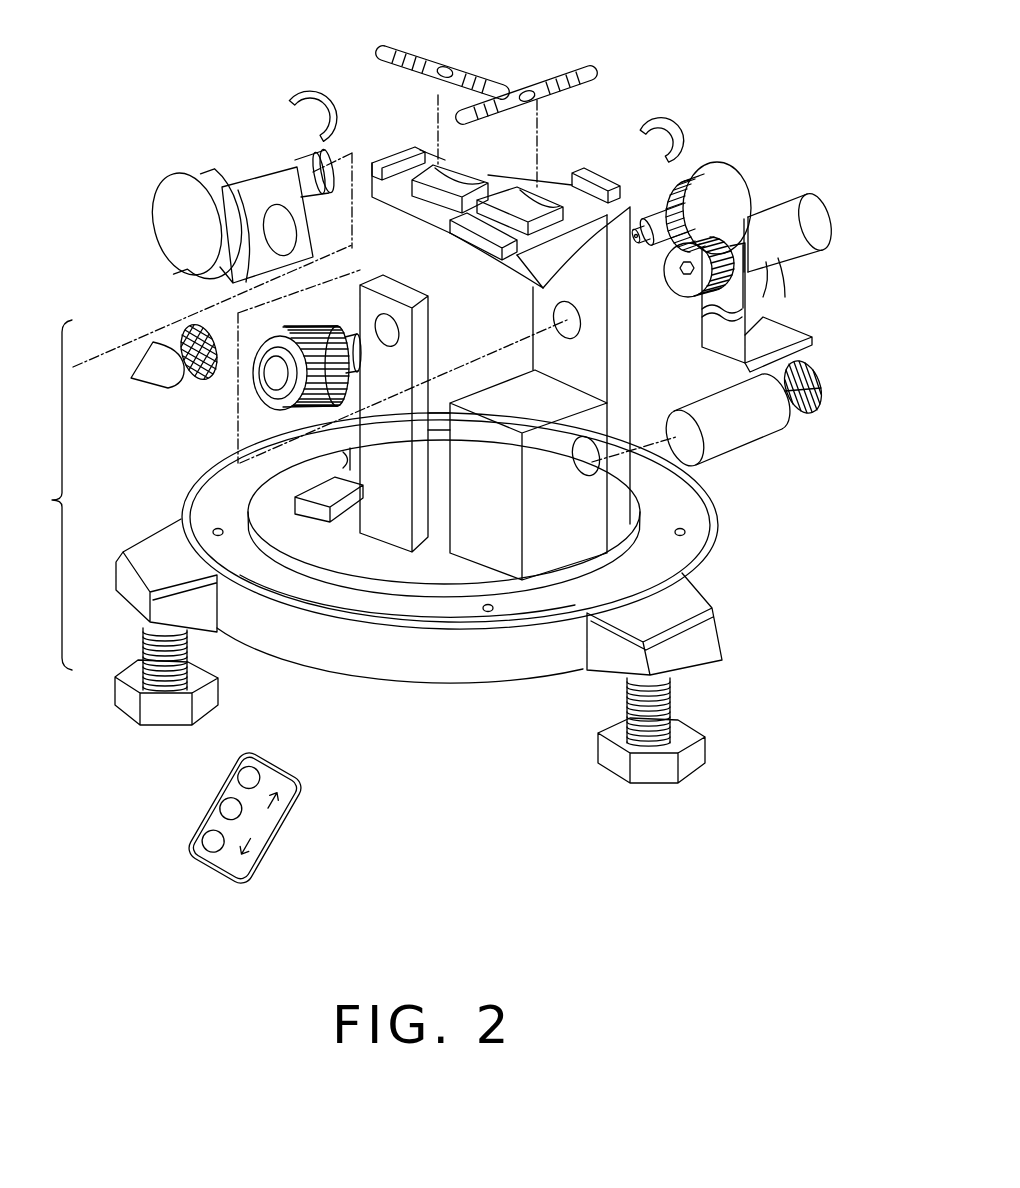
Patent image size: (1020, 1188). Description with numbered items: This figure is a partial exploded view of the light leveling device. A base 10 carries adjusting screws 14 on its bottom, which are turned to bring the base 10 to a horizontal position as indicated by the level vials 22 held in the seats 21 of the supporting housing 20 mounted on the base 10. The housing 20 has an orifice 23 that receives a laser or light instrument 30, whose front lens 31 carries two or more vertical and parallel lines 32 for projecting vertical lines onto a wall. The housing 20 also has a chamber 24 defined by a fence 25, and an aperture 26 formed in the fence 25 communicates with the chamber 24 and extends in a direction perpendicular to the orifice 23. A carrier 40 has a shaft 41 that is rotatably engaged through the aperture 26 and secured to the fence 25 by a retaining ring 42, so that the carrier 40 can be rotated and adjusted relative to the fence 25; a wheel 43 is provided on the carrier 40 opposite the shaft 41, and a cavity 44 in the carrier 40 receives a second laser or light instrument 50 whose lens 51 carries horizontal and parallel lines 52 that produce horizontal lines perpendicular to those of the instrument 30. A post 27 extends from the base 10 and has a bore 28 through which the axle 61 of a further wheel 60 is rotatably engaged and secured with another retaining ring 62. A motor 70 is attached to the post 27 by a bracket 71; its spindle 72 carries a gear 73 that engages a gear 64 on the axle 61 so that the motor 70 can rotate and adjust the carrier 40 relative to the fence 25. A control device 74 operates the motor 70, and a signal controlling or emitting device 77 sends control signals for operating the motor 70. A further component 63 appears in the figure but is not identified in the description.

The base 10 is at (440, 675).
The adjusting screws 14 is at (167, 677).
The supporting housing 20 is at (553, 392).
The seats 21 is at (453, 178).
The level vials 22 is at (468, 73).
The orifice 23 is at (588, 455).
The chamber 24 is at (513, 410).
The fence 25 is at (606, 365).
The aperture 26 is at (570, 322).
The post 27 is at (392, 491).
The bore 28 is at (388, 328).
The laser or light instrument 30 is at (742, 430).
The lens 31 is at (815, 413).
The vertical and parallel lines 32 is at (808, 405).
The carrier 40 is at (227, 169).
The shaft 41 is at (313, 155).
The retaining ring 42 is at (302, 88).
The gear or roller or wheel 43 is at (167, 207).
The cavity 44 is at (280, 232).
The laser or light instrument 50 is at (127, 353).
The lens 51 is at (168, 335).
The horizontal and parallel lines 52 is at (198, 378).
The gear or roller or wheel 60 is at (688, 170).
The axle 61 is at (668, 205).
The retaining ring 62 is at (662, 122).
The lens unit 63 is at (268, 378).
The gear 64 is at (714, 204).
The motor 70 is at (793, 206).
The bracket 71 is at (755, 340).
The spindle 72 is at (753, 227).
The gear 73 is at (726, 279).
The control device 74 is at (298, 500).
The signal controlling or emitting device 77 is at (255, 872).